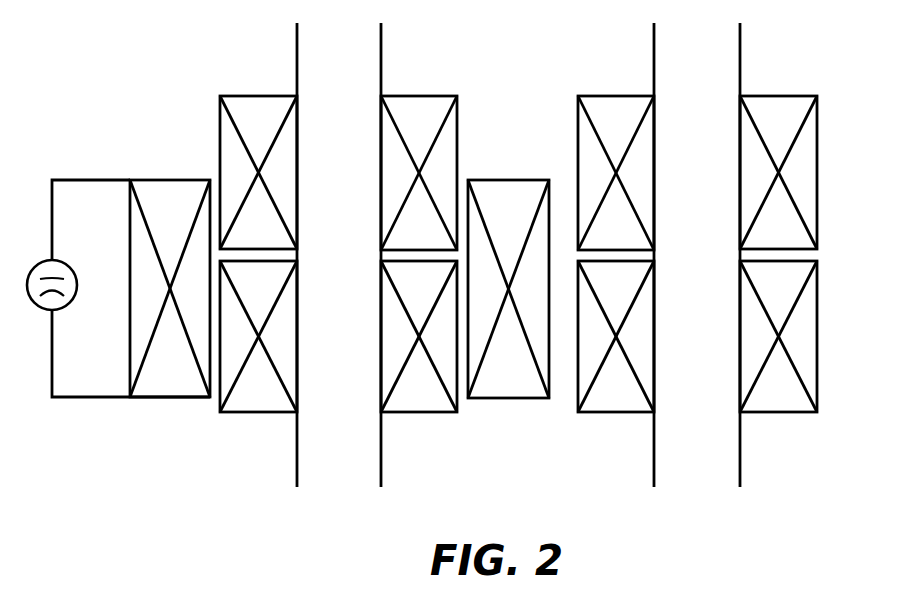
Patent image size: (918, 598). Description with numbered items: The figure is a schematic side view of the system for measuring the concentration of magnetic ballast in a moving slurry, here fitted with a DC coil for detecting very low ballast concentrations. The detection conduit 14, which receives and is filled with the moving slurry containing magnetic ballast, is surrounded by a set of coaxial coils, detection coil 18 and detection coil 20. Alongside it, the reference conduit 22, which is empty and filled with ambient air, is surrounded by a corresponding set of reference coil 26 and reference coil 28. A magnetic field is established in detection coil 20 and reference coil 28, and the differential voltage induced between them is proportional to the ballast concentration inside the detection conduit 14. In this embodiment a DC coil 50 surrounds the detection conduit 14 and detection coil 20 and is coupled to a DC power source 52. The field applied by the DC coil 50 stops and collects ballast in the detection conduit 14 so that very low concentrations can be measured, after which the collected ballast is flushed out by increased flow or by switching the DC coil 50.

The detection conduit 14 is at (382, 459).
The detection coil 18 is at (248, 94).
The detection coil 20 is at (258, 413).
The reference conduit 22 is at (653, 459).
The reference coil 26 is at (819, 175).
The reference coil 28 is at (819, 337).
The DC coil 50 is at (167, 400).
The DC power source 52 is at (71, 268).